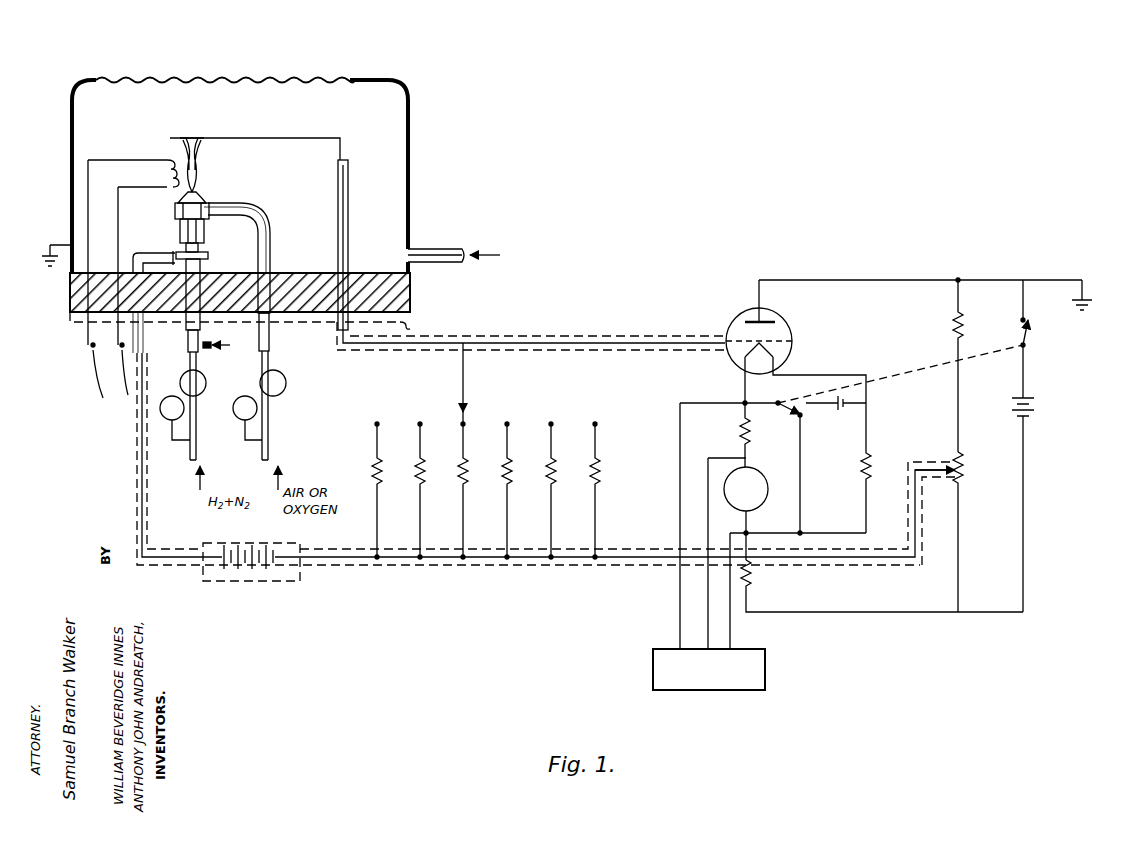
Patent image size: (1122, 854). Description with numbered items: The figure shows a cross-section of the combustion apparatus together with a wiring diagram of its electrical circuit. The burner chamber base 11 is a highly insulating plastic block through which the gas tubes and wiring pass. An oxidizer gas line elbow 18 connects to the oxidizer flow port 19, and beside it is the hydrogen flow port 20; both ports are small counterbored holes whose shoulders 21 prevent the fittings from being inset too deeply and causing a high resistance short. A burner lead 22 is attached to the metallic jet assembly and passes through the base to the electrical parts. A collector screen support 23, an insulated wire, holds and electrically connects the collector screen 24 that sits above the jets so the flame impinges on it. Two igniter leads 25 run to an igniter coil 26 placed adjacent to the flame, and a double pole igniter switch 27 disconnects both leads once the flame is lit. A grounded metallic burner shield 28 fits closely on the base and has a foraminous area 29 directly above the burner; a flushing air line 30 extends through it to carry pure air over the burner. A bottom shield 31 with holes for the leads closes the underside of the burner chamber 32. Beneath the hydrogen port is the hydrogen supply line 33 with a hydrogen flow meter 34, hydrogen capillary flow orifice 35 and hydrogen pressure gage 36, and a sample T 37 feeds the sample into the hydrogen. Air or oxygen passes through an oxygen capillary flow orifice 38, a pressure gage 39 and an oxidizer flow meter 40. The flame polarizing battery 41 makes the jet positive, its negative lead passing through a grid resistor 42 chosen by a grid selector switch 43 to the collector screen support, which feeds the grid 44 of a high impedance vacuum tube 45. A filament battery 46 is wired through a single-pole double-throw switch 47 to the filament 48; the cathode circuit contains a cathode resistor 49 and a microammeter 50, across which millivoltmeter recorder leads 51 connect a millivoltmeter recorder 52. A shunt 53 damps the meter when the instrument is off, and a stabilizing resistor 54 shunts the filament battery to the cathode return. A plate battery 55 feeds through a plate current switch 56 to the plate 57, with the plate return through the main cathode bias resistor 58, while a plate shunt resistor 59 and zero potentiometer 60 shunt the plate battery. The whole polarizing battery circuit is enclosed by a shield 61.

The burner chamber base 11 is at (408, 300).
The oxidizer gas line elbow 18 is at (276, 208).
The oxidizer flow port 19 is at (278, 280).
The hydrogen flow port 20 is at (184, 303).
The shoulders of the counterbored port 21 is at (258, 275).
The burner lead 22 is at (176, 252).
The collector screen support 23 is at (348, 215).
The collector screen 24 is at (185, 137).
The igniter leads 25 is at (118, 245).
The igniter coil 26 is at (168, 160).
The double pole igniter switch 27 is at (92, 348).
The burner shield 28 is at (410, 172).
The foraminous area 29 is at (286, 80).
The flushing air line 30 is at (432, 248).
The bottom shield 31 is at (254, 323).
The burner chamber 32 is at (380, 126).
The hydrogen supply line 33 is at (189, 340).
The hydrogen flow meter 34 is at (208, 385).
The hydrogen capillary flow orifice 35 is at (198, 420).
The hydrogen pressure gage 36 is at (164, 420).
The sample T 37 is at (208, 348).
The oxygen capillary flow orifice 38 is at (272, 422).
The pressure gage 39 is at (250, 390).
The oxidizer flow meter 40 is at (287, 386).
The flame polarizing battery 41 is at (235, 582).
The grid resistor 42 is at (467, 490).
The grid selector switch 43 is at (462, 382).
The grid 44 is at (784, 338).
The vacuum tube 45 is at (785, 316).
The filament battery 46 is at (850, 408).
The single-pole double-throw switch 47 is at (792, 412).
The filament 48 is at (790, 352).
The cathode resistor 49 is at (740, 428).
The microammeter 50 is at (764, 482).
The millivoltmeter recorder leads 51 is at (680, 608).
The millivoltmeter recorder 52 is at (652, 690).
The shunt 53 is at (802, 501).
The stabilizing resistor 54 is at (870, 452).
The plate battery 55 is at (1034, 410).
The plate current switch 56 is at (1028, 334).
The plate 57 is at (746, 312).
The main cathode bias resistor 58 is at (757, 584).
The plate shunt resistor 59 is at (962, 322).
The zero potentiometer 60 is at (966, 468).
The shield 61 is at (540, 343).